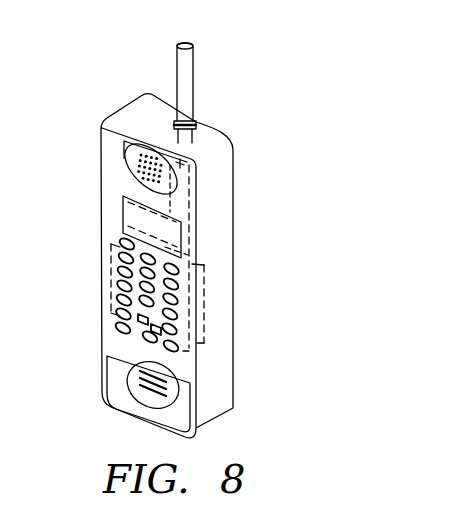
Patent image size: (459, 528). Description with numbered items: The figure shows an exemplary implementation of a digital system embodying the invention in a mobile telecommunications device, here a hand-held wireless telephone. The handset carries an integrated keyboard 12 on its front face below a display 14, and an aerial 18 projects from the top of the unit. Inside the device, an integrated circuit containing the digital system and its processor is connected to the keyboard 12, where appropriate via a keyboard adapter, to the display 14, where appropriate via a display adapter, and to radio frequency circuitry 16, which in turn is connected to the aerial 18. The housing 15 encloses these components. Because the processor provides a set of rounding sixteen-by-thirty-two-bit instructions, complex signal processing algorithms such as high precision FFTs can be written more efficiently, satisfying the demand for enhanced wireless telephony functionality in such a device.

The keyboard 12 is at (117, 278).
The display 14 is at (126, 212).
The housing 15 is at (233, 366).
The radio frequency (RF) circuitry 16 is at (128, 183).
The aerial 18 is at (189, 77).